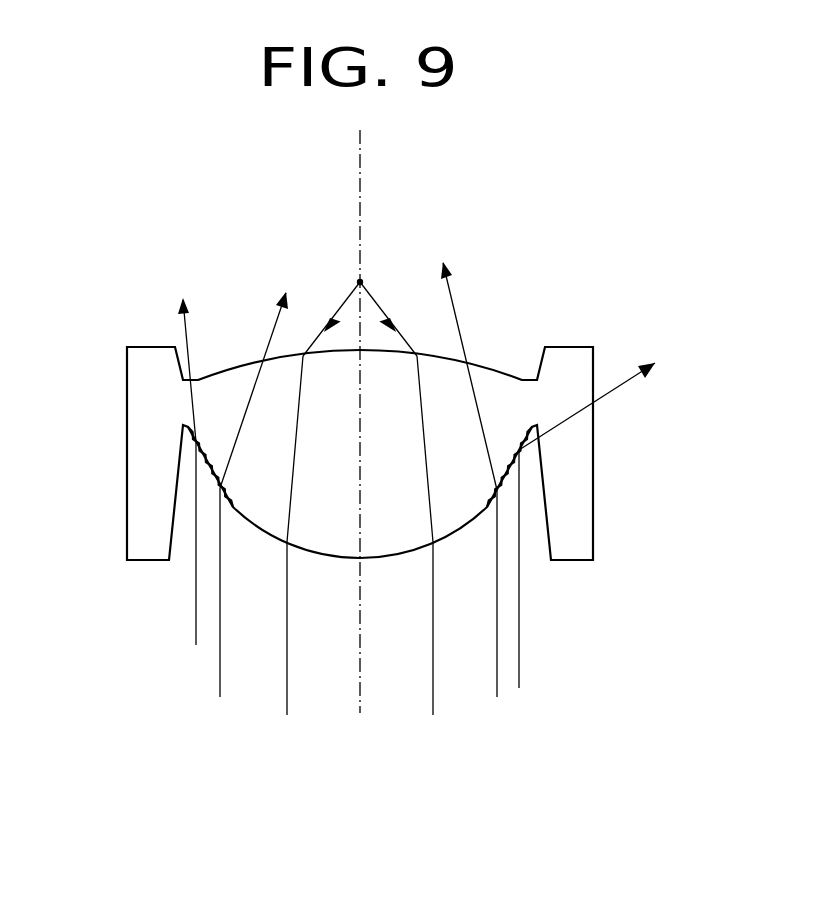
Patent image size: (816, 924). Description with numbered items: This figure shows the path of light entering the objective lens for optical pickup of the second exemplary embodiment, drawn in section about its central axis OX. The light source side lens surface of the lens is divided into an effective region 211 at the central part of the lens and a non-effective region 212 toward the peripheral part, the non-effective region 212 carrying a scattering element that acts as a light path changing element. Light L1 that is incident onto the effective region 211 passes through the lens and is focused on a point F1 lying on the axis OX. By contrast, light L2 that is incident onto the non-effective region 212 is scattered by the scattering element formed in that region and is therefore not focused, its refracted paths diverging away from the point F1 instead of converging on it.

The effective region 211 is at (393, 558).
The non-effective region 212 is at (207, 475).
The optical axis OX is at (360, 132).
The point F1 is at (363, 282).
The light L1 is at (286, 705).
The light L2 is at (548, 678).